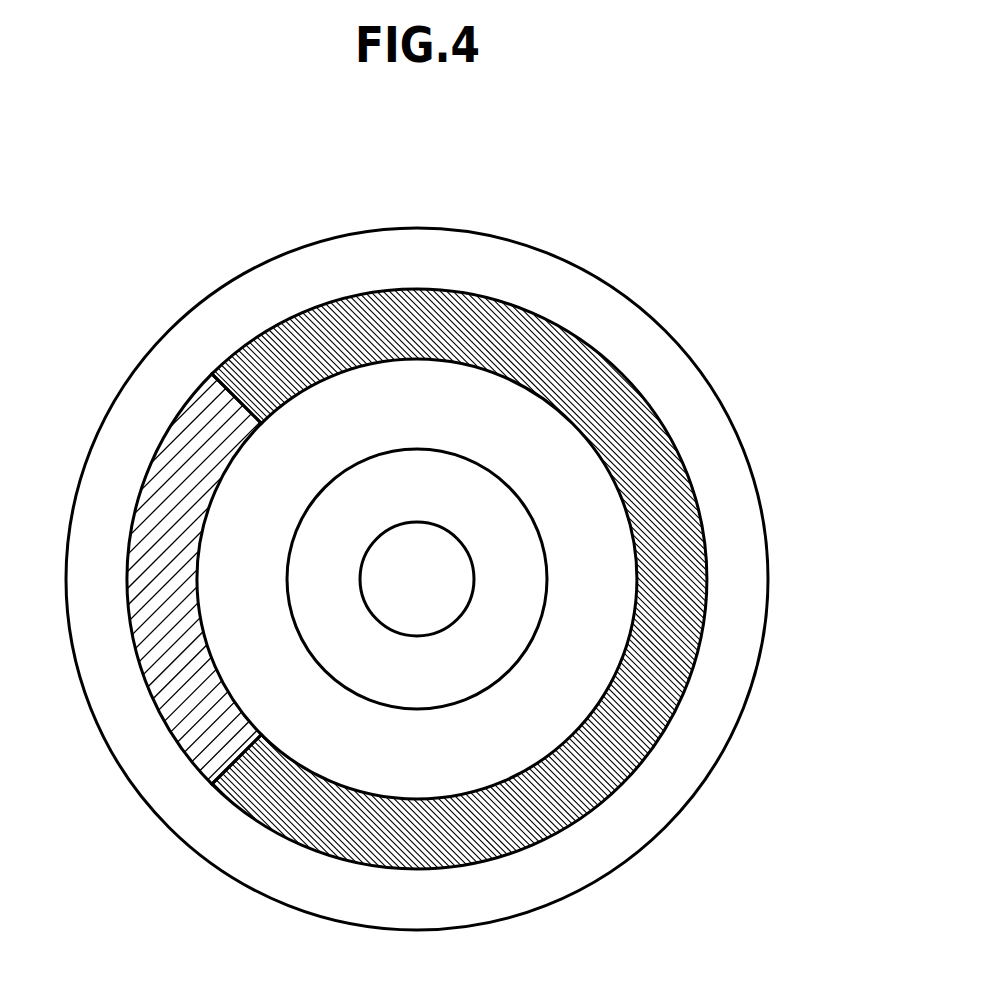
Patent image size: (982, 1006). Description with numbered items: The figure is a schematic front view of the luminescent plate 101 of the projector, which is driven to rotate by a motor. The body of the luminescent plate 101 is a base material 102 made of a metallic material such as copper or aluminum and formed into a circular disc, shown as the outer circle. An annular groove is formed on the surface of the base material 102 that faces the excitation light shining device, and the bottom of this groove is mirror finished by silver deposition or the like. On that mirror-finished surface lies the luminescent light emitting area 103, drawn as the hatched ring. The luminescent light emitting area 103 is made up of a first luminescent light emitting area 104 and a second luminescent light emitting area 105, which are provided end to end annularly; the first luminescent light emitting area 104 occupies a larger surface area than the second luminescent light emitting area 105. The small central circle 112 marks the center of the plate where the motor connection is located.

The luminescent plate 101 is at (641, 199).
The base material 102 is at (672, 338).
The luminescent light emitting area 103 is at (434, 566).
The first luminescent light emitting area 104 is at (652, 695).
The second luminescent light emitting area 105 is at (155, 707).
The core 112 is at (417, 579).